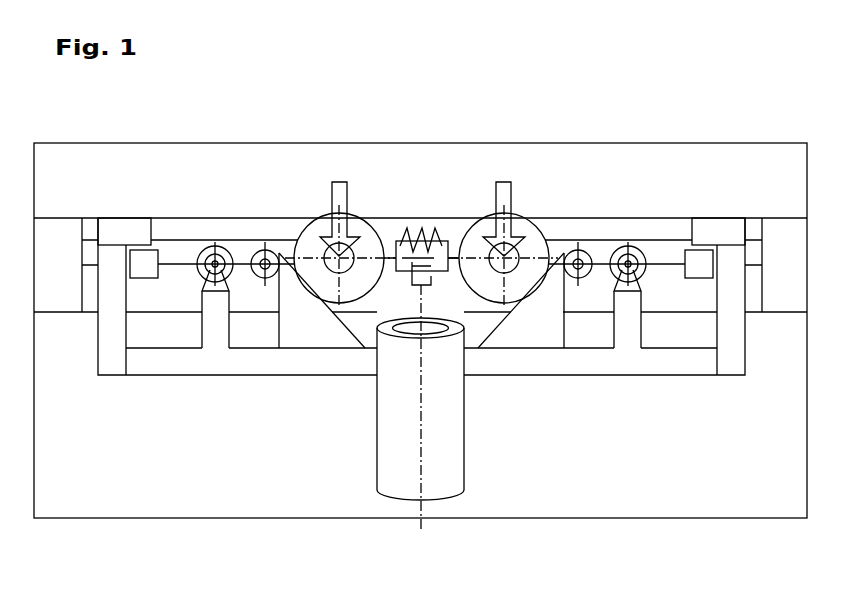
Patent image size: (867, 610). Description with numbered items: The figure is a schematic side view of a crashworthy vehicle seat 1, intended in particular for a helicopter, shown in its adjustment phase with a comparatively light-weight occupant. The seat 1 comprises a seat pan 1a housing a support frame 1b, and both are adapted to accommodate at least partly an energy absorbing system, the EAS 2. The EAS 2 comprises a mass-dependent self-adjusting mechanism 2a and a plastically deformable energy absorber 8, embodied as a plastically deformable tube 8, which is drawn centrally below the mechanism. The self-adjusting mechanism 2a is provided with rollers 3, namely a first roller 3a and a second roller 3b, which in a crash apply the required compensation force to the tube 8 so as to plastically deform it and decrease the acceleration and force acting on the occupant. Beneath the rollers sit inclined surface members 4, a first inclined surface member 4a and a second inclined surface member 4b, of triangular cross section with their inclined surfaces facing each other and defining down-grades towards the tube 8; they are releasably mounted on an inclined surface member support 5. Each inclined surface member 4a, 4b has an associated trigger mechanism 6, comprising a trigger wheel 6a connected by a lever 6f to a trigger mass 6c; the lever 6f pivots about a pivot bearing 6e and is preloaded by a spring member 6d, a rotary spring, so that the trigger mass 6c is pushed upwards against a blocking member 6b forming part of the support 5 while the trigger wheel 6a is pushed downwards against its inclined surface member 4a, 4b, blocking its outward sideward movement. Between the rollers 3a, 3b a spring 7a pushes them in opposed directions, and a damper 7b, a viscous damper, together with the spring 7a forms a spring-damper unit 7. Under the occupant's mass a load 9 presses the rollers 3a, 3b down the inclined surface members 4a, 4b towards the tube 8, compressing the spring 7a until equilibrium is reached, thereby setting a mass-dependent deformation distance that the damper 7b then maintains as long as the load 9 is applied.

The vehicle seat 1 is at (772, 518).
The seat pan 1a is at (792, 240).
The support frame 1b is at (755, 253).
The EAS 2 is at (551, 235).
The mass-dependent self-adjusting mechanism 2a is at (289, 235).
The rollers 3 is at (354, 217).
The first roller 3a is at (316, 222).
The second roller 3b is at (528, 222).
The inclined surface members 4 is at (572, 330).
The first inclined surface member 4a is at (303, 330).
The second inclined surface member 4b is at (538, 328).
The inclined surface member support 5 is at (633, 365).
The trigger mechanism 6 is at (190, 285).
The trigger wheel 6a is at (257, 278).
The blocking member 6b is at (142, 233).
The trigger mass 6c is at (159, 257).
The spring member 6d is at (200, 248).
The pivot bearing 6e is at (215, 247).
The lever 6f is at (168, 268).
The spring-damper unit 7 is at (443, 286).
The spring 7a is at (413, 228).
The damper 7b is at (412, 280).
The plastically deformable energy absorber 8 is at (392, 481).
The load 9 is at (332, 197).